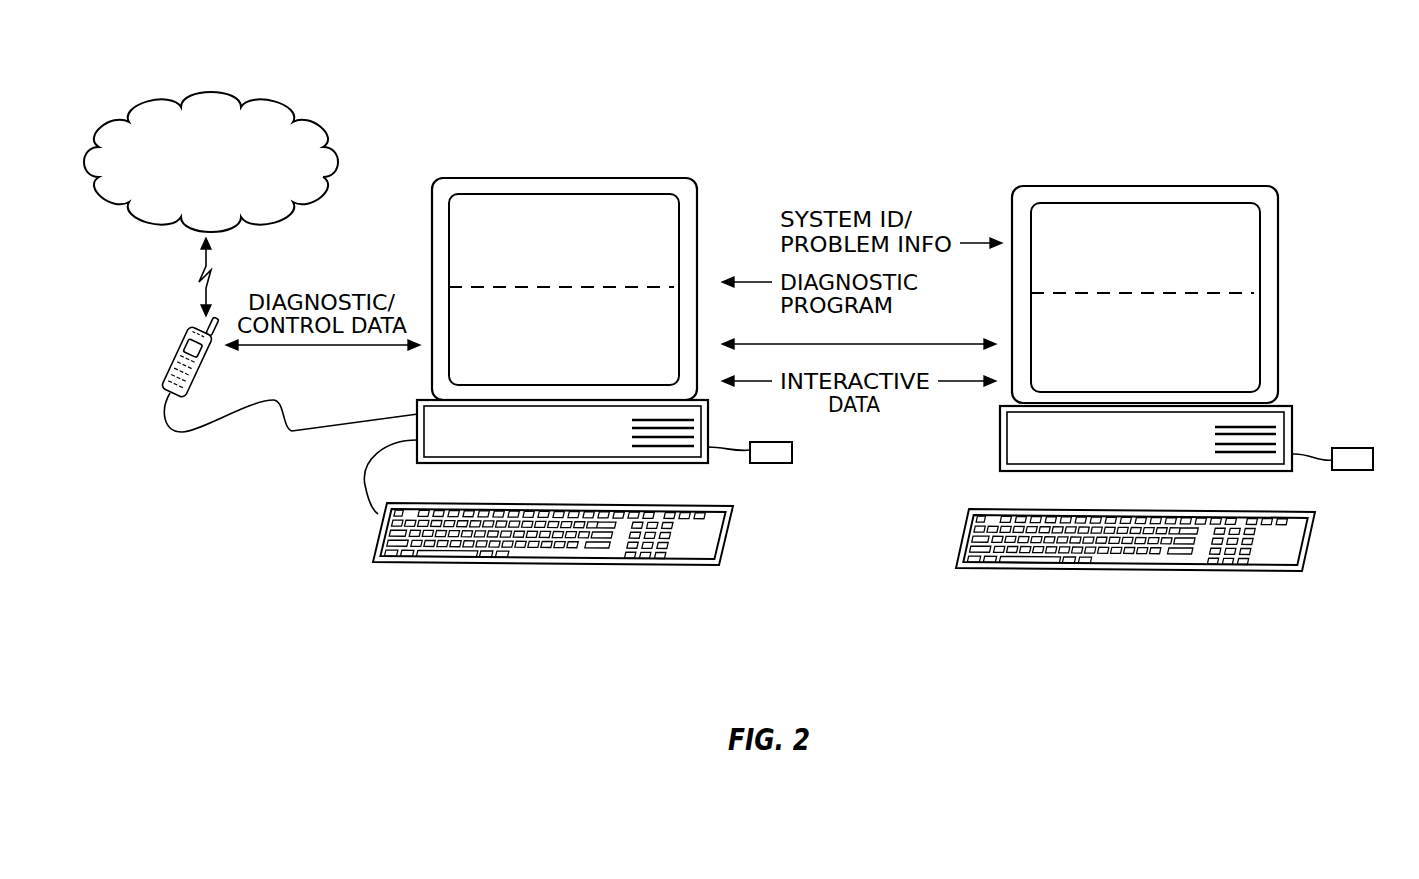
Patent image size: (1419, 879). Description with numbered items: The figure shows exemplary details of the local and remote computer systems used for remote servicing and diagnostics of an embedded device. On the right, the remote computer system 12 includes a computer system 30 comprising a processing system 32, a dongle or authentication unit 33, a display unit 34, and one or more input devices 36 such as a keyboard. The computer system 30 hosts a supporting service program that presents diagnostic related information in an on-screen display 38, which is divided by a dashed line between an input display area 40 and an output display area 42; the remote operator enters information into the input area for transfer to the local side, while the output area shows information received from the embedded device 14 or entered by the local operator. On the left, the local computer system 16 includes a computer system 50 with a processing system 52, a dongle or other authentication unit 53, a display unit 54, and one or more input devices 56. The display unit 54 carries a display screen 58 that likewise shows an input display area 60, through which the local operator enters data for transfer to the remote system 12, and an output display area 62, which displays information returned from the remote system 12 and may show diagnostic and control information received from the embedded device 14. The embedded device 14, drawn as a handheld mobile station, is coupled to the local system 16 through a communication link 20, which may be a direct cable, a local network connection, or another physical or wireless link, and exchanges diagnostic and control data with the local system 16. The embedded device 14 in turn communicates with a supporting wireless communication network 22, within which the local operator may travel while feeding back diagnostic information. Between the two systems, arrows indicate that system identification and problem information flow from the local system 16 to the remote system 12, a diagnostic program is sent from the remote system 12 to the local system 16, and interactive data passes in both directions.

The remote computer system 12 is at (1162, 631).
The embedded device 14 is at (168, 393).
The local computer system 16 is at (568, 631).
The communication link 20 is at (283, 433).
The wireless communication network 22 is at (135, 225).
The computer system 30 is at (1145, 153).
The processing system 32 is at (1268, 471).
The dongle or authentication unit 33 is at (1364, 470).
The display unit 34 is at (1183, 269).
The input device 36 is at (1327, 541).
The on-screen display 38 is at (1192, 263).
The input display area 40 is at (1243, 233).
The output display area 42 is at (1243, 325).
The computer system 50 is at (565, 144).
The processing system 52 is at (686, 463).
The dongle or authentication unit 53 is at (783, 463).
The display unit 54 is at (588, 264).
The input device 56 is at (742, 535).
The display screen 58 is at (589, 257).
The input display area 60 is at (662, 228).
The output display area 62 is at (660, 318).